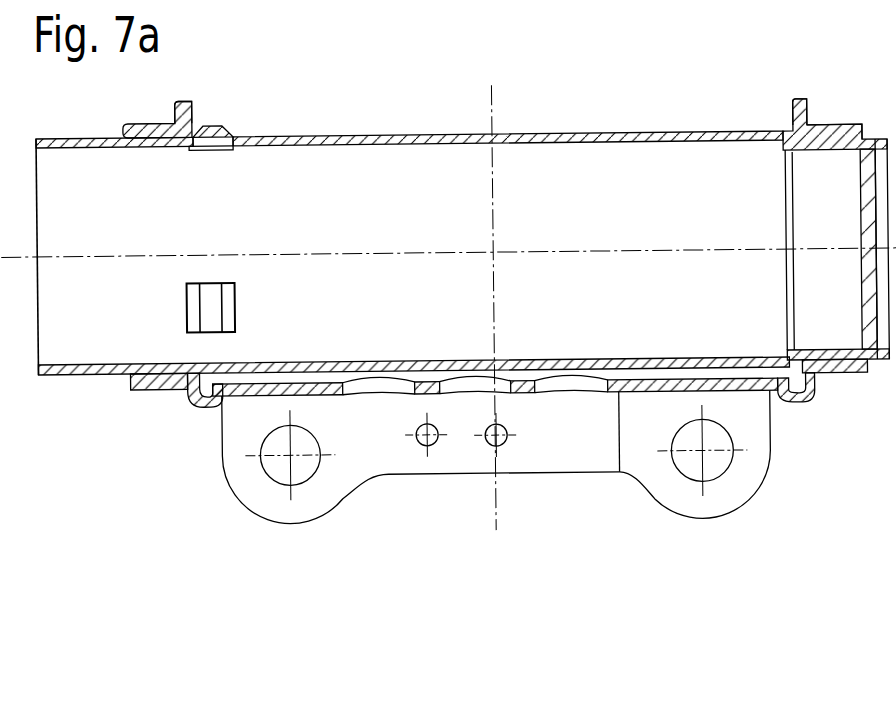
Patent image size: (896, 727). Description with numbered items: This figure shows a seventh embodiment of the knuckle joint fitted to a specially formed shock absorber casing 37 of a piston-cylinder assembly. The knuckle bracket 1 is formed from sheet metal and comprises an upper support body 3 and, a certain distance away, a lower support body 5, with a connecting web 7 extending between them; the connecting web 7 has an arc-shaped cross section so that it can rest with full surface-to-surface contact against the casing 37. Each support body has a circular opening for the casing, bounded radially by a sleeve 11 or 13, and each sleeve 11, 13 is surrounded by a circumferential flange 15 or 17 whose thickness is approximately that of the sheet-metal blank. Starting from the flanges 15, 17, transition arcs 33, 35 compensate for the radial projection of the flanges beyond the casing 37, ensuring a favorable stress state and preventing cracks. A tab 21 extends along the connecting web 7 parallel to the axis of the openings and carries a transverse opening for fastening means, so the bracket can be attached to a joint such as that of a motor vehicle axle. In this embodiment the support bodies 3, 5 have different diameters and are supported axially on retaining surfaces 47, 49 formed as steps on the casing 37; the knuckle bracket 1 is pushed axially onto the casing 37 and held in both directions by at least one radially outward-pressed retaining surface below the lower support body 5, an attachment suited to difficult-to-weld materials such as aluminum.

The knuckle bracket 1 is at (1, 564).
The upper support body 3 is at (856, 402).
The lower support body 5 is at (139, 396).
The connecting web 7 is at (618, 476).
The sleeve 11 is at (843, 136).
The sleeve 13 is at (147, 128).
The circumferential flange 15 is at (803, 122).
The circumferential flange 17 is at (192, 112).
The tab 21 is at (703, 512).
The transition arc 33 is at (807, 410).
The transition arc 35 is at (182, 414).
The casing 37 is at (586, 137).
The retaining surface 47 is at (808, 385).
The retaining surface 49 is at (205, 135).